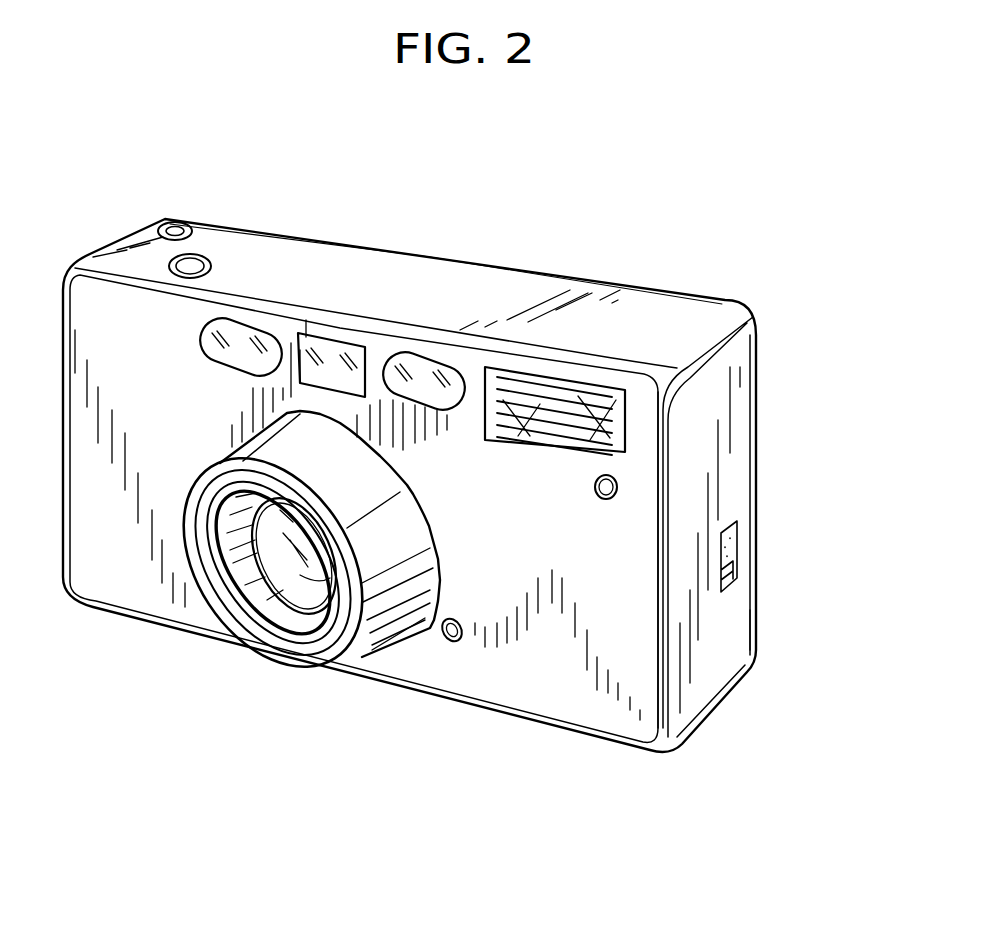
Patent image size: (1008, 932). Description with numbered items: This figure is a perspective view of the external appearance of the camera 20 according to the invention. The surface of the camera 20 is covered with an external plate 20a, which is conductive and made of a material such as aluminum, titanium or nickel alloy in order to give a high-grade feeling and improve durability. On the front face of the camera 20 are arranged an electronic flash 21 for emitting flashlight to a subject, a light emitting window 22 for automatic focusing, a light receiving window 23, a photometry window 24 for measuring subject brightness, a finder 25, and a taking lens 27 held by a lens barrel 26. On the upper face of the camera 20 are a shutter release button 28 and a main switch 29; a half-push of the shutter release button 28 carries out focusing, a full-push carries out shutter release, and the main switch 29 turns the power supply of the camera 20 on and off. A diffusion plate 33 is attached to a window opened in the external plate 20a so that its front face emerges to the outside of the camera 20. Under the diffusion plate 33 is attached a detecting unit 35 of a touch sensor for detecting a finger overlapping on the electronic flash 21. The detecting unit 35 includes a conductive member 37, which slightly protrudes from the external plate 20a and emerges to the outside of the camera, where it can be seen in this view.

The camera 20 is at (759, 348).
The external plate 20a is at (757, 435).
The electronic flash 21 is at (555, 344).
The light emitting window 22 is at (245, 335).
The light receiving window 23 is at (430, 363).
The photometry window 24 is at (448, 645).
The finder 25 is at (334, 350).
The lens barrel 26 is at (410, 522).
The taking lens 27 is at (311, 597).
The shutter release button 28 is at (197, 267).
The main switch 29 is at (168, 221).
The diffusion plate 33 is at (537, 392).
The detecting unit 35 is at (637, 487).
The conductive member 37 is at (607, 501).